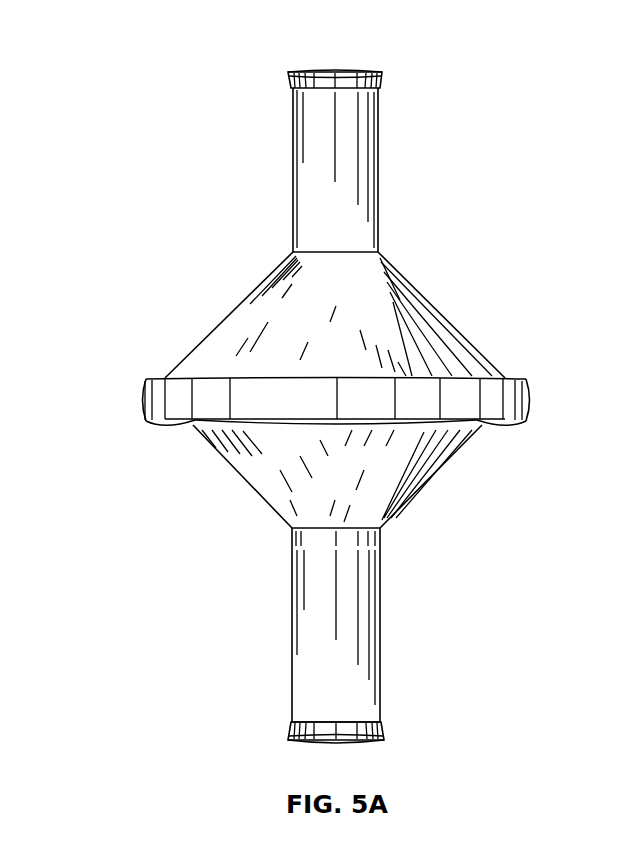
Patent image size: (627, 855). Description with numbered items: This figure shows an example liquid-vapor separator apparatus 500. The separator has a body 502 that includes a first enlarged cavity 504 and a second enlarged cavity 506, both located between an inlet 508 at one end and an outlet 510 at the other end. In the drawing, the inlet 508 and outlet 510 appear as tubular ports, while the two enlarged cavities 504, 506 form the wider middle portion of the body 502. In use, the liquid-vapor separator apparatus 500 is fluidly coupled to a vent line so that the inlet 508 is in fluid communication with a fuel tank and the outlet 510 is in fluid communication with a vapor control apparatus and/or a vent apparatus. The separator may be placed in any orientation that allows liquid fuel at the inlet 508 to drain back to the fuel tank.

The liquid-vapor separator apparatus 500 is at (232, 46).
The body 502 is at (142, 405).
The first enlarged cavity 504 is at (413, 497).
The second enlarged cavity 506 is at (249, 297).
The inlet 508 is at (292, 635).
The outlet 510 is at (379, 138).